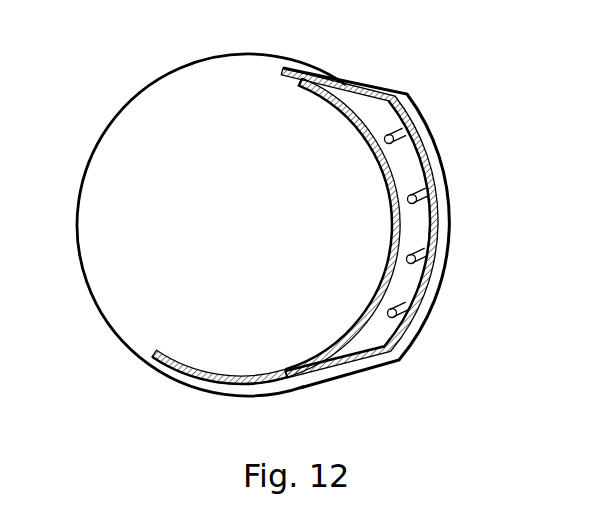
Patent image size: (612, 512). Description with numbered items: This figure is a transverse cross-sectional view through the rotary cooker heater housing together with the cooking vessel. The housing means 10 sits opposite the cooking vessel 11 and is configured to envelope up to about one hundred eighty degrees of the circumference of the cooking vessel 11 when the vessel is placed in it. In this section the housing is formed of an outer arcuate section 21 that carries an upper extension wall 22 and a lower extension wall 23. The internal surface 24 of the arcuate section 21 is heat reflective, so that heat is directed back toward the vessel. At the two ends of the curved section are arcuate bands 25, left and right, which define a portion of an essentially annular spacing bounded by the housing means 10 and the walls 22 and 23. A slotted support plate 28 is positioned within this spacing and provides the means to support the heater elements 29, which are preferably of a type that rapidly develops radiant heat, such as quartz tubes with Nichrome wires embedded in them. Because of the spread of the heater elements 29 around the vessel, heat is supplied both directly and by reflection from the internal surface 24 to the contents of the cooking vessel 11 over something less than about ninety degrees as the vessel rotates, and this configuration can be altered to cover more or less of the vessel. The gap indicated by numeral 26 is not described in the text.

The housing means 10 is at (206, 221).
The cooking vessel 11 is at (178, 100).
The outer arcuate section 21 is at (447, 205).
The upper extension wall 22 is at (338, 84).
The lower extension wall 23 is at (363, 365).
The internal surface 24 is at (440, 188).
The arcuate bands 25 is at (437, 298).
The gap 26 is at (377, 120).
The slotted support plate 28 is at (397, 117).
The heater elements 29 is at (422, 152).